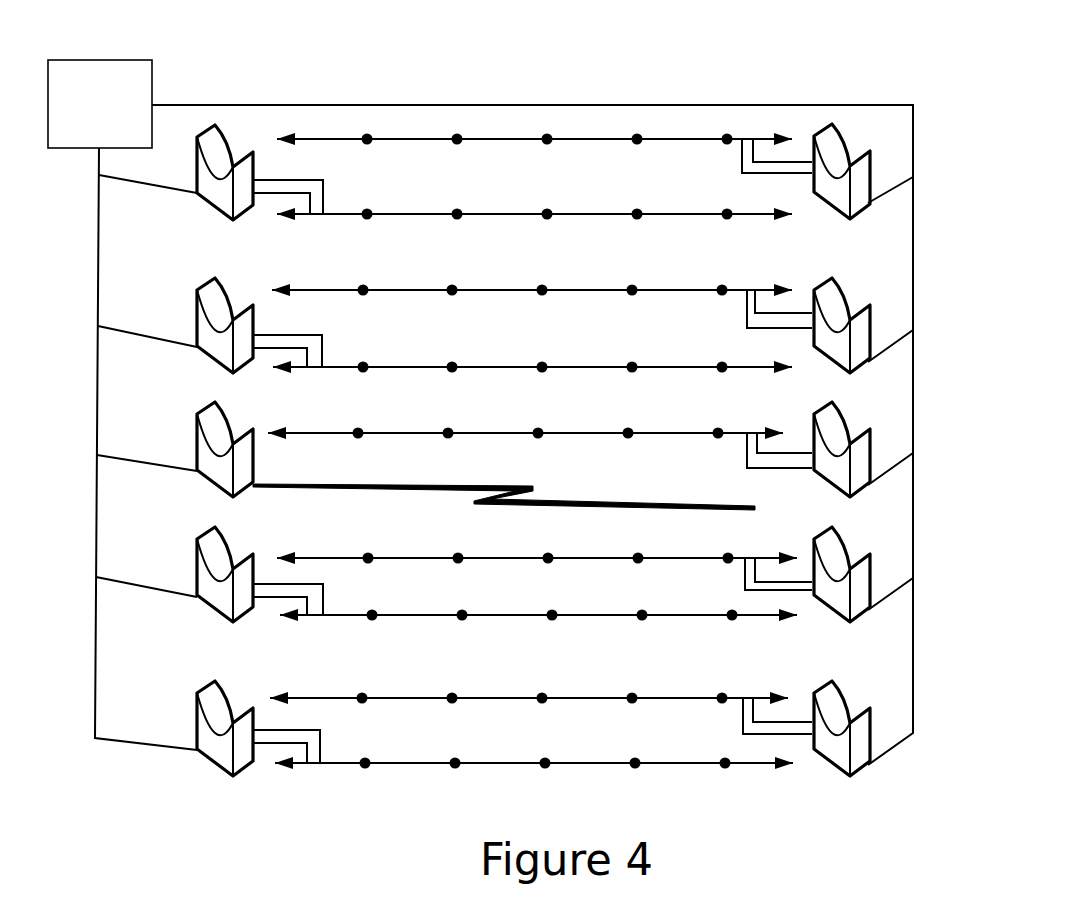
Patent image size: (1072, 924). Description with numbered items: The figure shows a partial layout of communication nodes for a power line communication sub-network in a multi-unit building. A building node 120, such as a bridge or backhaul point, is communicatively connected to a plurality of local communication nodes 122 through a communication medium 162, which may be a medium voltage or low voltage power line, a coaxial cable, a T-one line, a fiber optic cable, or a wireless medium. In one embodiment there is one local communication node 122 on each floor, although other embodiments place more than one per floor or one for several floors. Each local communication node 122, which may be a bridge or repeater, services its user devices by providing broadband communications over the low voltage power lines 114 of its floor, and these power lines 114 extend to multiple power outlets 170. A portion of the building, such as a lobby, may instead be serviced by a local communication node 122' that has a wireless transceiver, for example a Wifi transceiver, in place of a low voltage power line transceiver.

The building node 120 is at (100, 58).
The communication medium 162 is at (665, 105).
The low voltage power lines 114 is at (503, 141).
The power outlets 170 is at (400, 237).
The local communication node 122 is at (548, 471).
The local communication node with wireless transceiver 122' is at (476, 471).